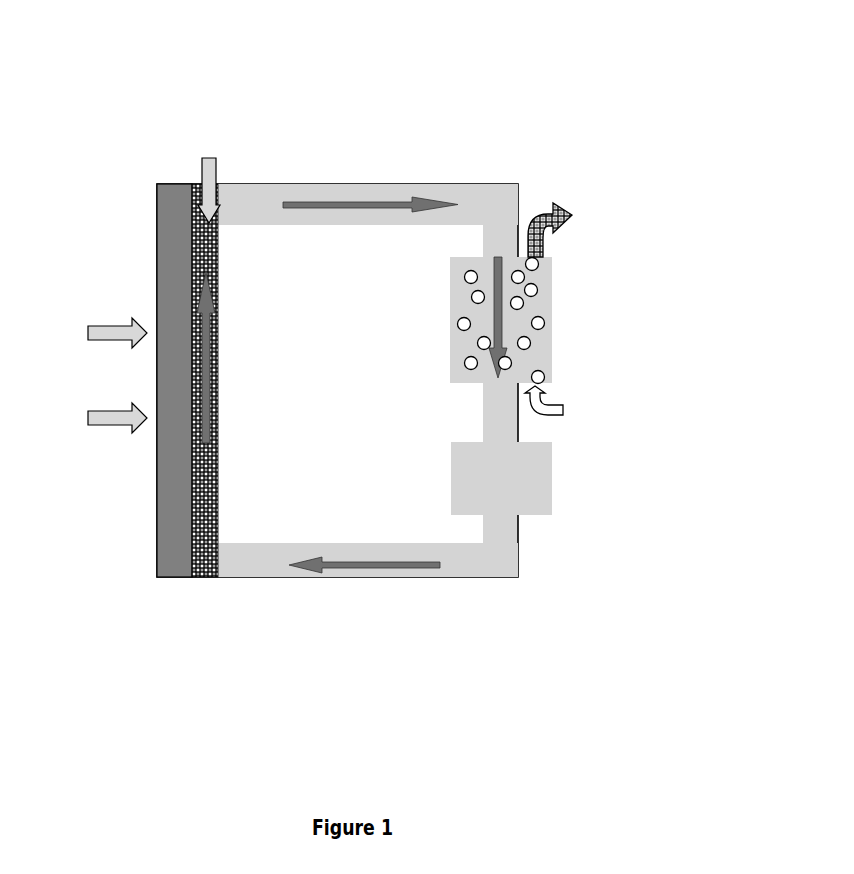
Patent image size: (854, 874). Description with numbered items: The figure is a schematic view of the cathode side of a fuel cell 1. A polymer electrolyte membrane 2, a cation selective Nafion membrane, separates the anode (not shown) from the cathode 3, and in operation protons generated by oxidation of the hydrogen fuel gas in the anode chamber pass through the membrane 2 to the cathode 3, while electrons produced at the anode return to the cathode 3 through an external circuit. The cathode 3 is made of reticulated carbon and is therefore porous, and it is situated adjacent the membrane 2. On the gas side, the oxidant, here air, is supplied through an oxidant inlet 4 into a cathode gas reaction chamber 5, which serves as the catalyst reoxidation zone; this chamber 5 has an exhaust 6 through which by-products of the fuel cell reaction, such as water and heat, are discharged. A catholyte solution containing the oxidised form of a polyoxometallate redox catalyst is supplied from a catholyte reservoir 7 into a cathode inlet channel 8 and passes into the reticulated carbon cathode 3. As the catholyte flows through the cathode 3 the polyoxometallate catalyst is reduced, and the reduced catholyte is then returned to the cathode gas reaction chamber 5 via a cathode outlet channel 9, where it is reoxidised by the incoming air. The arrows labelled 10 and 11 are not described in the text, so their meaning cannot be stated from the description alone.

The fuel cell 1 is at (395, 123).
The polymer electrolyte membrane 2 is at (177, 523).
The cathode 3 is at (212, 563).
The oxidant inlet 4 is at (562, 408).
The cathode gas reaction chamber 5 is at (535, 310).
The exhaust 6 is at (568, 230).
The catholyte reservoir 7 is at (527, 468).
The cathode inlet channel 8 is at (443, 578).
The cathode outlet channel 9 is at (343, 205).
The incident heat flux 10 is at (100, 379).
The liquid feed 11 is at (205, 176).